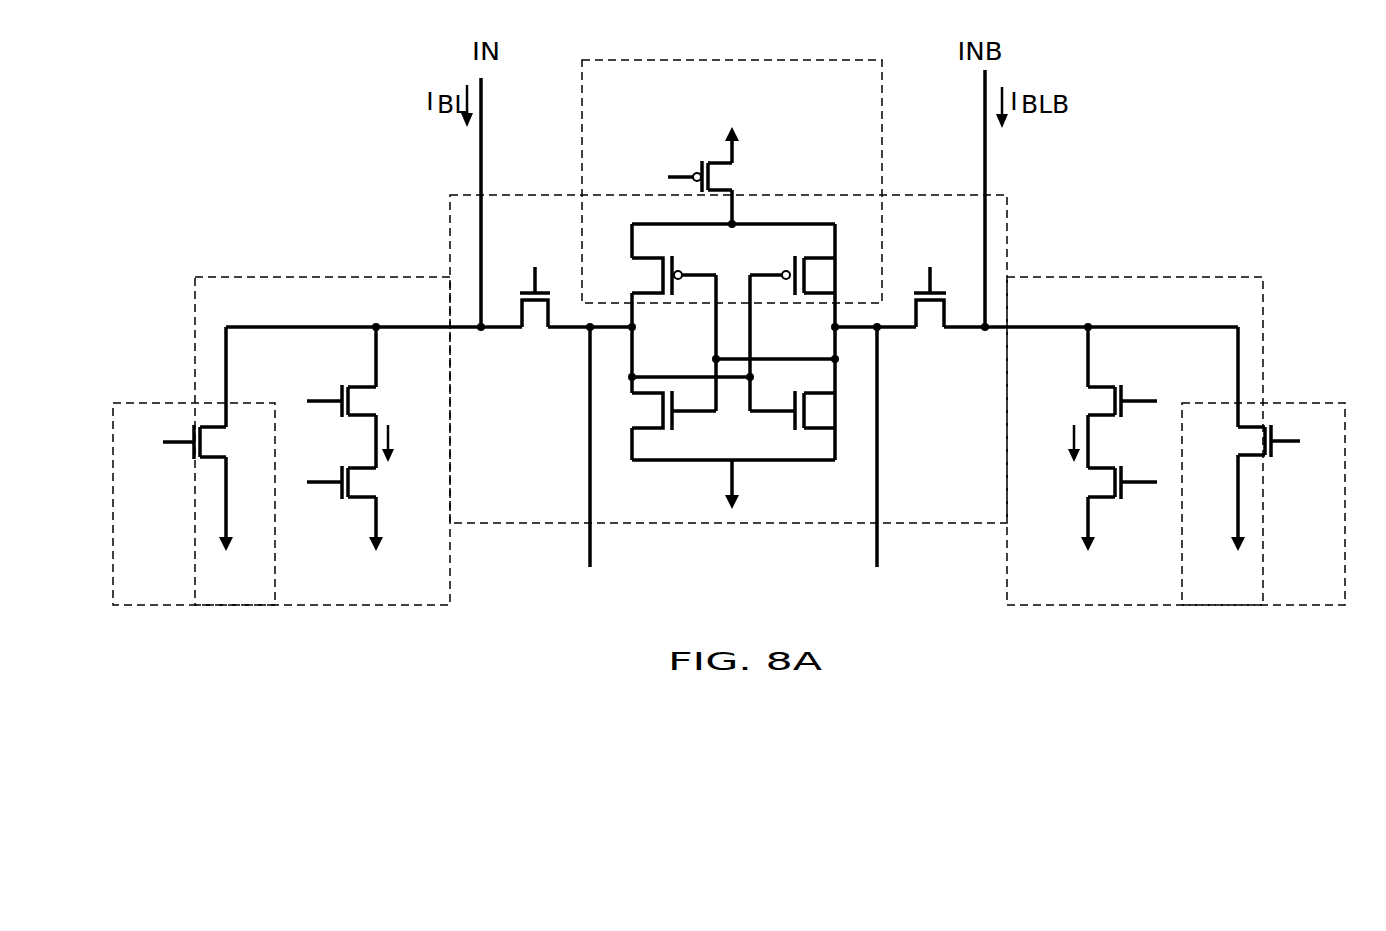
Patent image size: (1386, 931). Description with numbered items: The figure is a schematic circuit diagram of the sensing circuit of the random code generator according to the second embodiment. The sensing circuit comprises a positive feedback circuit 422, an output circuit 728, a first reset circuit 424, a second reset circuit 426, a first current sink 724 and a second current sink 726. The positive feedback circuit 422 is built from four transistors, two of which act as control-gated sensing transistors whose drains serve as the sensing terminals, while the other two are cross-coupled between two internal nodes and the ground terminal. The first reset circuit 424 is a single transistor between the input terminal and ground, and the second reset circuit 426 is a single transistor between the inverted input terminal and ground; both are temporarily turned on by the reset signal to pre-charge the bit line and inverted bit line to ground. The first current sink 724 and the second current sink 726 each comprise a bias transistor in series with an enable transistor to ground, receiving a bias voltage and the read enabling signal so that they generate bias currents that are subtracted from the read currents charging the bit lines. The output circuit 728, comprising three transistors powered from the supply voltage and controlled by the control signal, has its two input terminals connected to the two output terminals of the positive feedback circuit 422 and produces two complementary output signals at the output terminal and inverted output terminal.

The first current sink 724 is at (305, 308).
The second current sink 726 is at (1197, 308).
The output circuit 728 is at (860, 99).
The positive feedback circuit 422 is at (540, 513).
The first reset circuit 424 is at (180, 586).
The second reset circuit 426 is at (1335, 597).